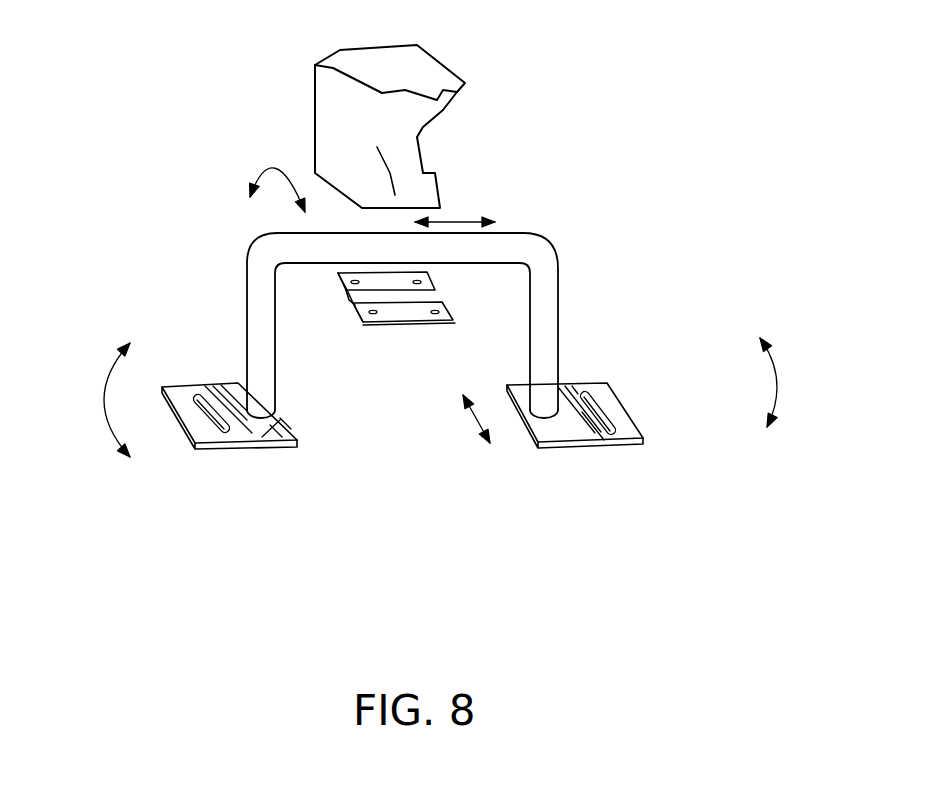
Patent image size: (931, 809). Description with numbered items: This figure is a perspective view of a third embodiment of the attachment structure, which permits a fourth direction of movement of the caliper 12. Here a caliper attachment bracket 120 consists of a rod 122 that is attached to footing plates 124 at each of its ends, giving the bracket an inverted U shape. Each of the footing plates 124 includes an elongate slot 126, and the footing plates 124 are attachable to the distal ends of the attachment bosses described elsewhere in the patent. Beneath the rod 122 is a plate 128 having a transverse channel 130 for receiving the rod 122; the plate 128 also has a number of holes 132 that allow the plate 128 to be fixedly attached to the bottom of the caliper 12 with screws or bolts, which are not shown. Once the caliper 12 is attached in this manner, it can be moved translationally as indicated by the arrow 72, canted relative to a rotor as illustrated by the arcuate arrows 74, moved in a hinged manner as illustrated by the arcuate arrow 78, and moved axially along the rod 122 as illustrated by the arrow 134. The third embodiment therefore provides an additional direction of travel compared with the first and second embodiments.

The caliper 12 is at (437, 75).
The arrow 72 is at (473, 420).
The arcuate arrows 74 is at (103, 400).
The arcuate arrow 78 is at (273, 170).
The caliper attachment bracket 120 is at (495, 302).
The rod 122 is at (502, 242).
The footing plates 124 is at (233, 437).
The elongate slots 126 is at (195, 397).
The plate 128 is at (413, 313).
The transverse channel 130 is at (348, 295).
The holes 132 is at (357, 313).
The arrow 134 is at (453, 222).